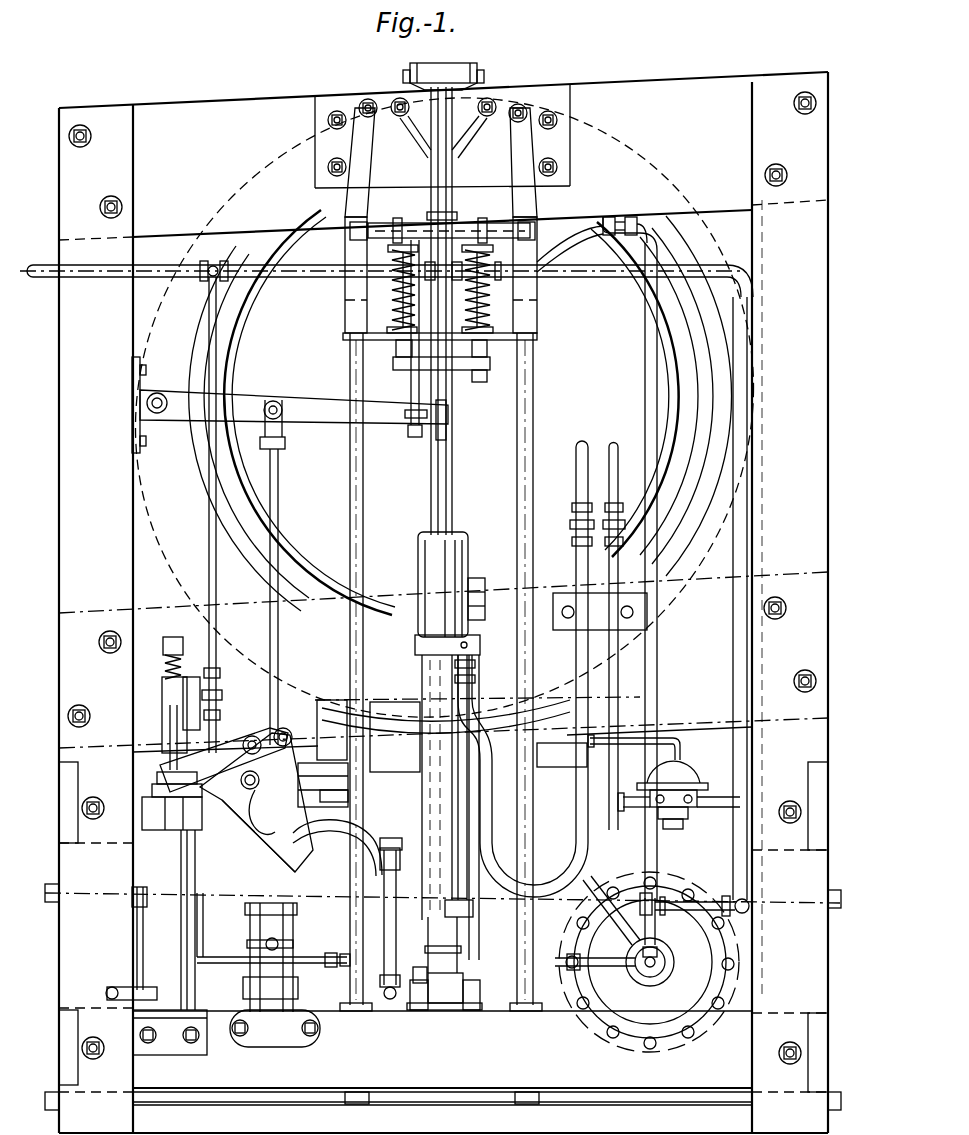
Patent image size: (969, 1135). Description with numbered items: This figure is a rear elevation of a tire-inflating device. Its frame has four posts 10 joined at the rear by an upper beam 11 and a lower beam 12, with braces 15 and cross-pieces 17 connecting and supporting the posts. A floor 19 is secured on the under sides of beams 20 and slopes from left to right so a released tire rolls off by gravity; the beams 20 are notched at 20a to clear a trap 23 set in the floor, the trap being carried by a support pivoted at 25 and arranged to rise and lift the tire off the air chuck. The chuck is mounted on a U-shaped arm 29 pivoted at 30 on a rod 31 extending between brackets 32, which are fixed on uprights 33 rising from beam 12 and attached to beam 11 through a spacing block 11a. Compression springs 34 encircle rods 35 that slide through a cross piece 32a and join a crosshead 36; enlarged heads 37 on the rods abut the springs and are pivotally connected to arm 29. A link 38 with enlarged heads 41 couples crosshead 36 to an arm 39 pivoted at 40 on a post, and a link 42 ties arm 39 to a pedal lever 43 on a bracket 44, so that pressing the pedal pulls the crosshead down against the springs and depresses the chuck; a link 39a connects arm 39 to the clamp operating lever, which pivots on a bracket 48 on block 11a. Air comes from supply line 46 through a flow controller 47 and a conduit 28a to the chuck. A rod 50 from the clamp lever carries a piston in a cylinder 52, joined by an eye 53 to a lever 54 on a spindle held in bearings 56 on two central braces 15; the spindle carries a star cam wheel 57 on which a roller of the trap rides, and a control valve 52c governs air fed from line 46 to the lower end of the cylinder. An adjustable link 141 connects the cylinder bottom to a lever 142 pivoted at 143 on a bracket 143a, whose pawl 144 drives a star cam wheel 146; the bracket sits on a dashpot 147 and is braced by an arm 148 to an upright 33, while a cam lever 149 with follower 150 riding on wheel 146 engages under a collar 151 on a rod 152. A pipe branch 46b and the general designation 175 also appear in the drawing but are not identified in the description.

The post 10 is at (70, 574).
The upper rear beam 11 is at (590, 100).
The spacing block 11a is at (550, 88).
The lower rear beam 12 is at (408, 1075).
The brace 15 is at (355, 985).
The cross-piece 17 is at (70, 1063).
The floor 19 is at (145, 760).
The beam 20 is at (237, 630).
The notch 20a is at (385, 700).
The trap 23 is at (324, 745).
The pivot 25 is at (552, 785).
The conduit 28a is at (665, 407).
The U-shaped arm 29 is at (472, 228).
The pivot 30 is at (496, 238).
The rod 31 is at (380, 230).
The bracket 32 is at (350, 140).
The cross piece 32a is at (548, 345).
The upright 33 is at (350, 497).
The compression spring 34 is at (398, 300).
The rod 35 is at (390, 285).
The crosshead 36 is at (480, 362).
The enlarged head 37 is at (390, 247).
The link 38 is at (455, 398).
The arm 39 is at (312, 408).
The link 39a is at (413, 395).
The pivot 40 is at (160, 393).
The enlarged head 41 is at (495, 345).
The link 42 is at (315, 540).
The pedal lever 43 is at (268, 1050).
The bracket 44 is at (322, 1040).
The supply line 46 is at (200, 258).
The vertical pipe branch 46b is at (208, 510).
The flow controller 47 is at (600, 945).
The bracket 48 is at (462, 132).
The rod 50 is at (450, 498).
The cylinder 52 is at (425, 582).
The control valve 52c is at (675, 770).
The eye 53 is at (447, 1003).
The lever 54 is at (420, 1003).
The bearing 56 is at (392, 832).
The star cam wheel 57 is at (442, 828).
The adjustable link 141 is at (384, 928).
The lever 142 is at (312, 826).
The pivot 143 is at (250, 790).
The bracket 143a is at (240, 840).
The pawl 144 is at (268, 832).
The star cam wheel 146 is at (300, 787).
The dashpot 147 is at (145, 920).
The arm 148 is at (290, 735).
The cam lever 149 is at (232, 740).
The cam follower 150 is at (262, 740).
The collar 151 is at (165, 712).
The rod 152 is at (150, 770).
The machine 175 is at (735, 52).